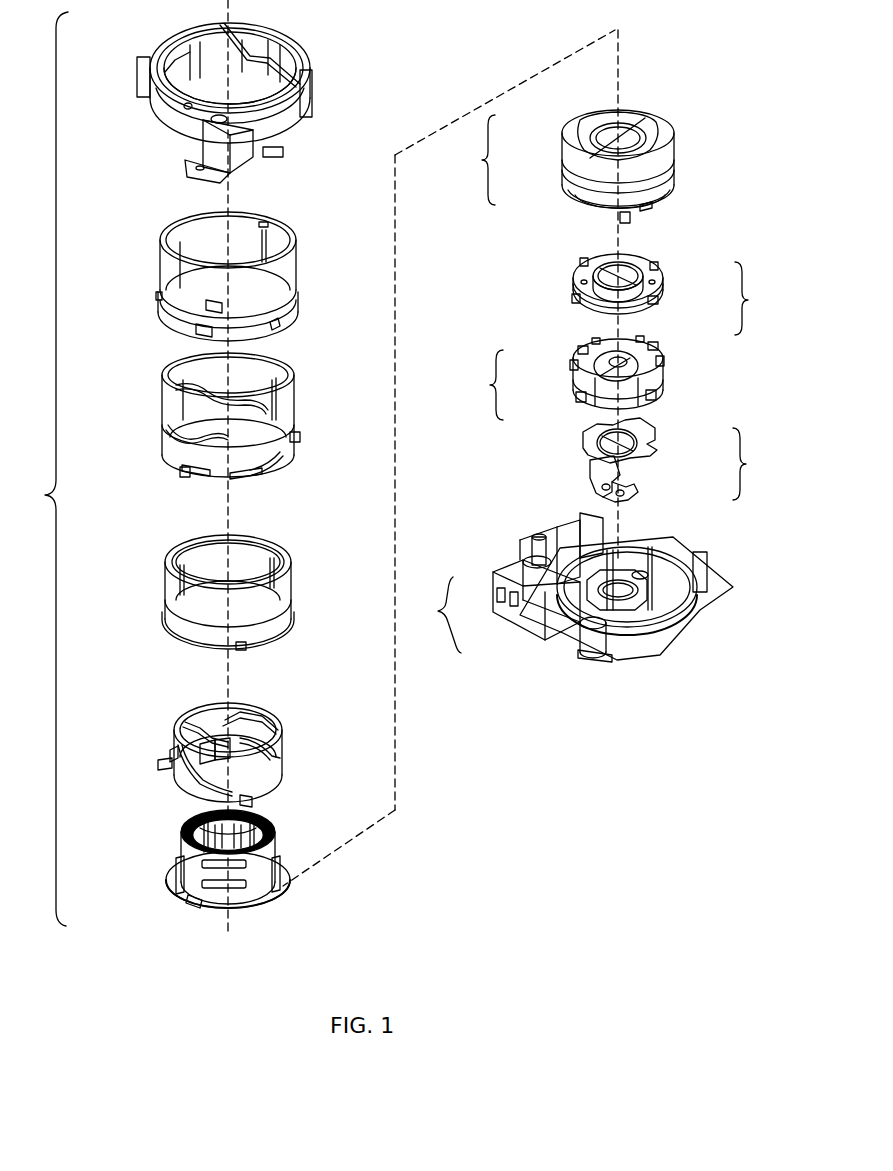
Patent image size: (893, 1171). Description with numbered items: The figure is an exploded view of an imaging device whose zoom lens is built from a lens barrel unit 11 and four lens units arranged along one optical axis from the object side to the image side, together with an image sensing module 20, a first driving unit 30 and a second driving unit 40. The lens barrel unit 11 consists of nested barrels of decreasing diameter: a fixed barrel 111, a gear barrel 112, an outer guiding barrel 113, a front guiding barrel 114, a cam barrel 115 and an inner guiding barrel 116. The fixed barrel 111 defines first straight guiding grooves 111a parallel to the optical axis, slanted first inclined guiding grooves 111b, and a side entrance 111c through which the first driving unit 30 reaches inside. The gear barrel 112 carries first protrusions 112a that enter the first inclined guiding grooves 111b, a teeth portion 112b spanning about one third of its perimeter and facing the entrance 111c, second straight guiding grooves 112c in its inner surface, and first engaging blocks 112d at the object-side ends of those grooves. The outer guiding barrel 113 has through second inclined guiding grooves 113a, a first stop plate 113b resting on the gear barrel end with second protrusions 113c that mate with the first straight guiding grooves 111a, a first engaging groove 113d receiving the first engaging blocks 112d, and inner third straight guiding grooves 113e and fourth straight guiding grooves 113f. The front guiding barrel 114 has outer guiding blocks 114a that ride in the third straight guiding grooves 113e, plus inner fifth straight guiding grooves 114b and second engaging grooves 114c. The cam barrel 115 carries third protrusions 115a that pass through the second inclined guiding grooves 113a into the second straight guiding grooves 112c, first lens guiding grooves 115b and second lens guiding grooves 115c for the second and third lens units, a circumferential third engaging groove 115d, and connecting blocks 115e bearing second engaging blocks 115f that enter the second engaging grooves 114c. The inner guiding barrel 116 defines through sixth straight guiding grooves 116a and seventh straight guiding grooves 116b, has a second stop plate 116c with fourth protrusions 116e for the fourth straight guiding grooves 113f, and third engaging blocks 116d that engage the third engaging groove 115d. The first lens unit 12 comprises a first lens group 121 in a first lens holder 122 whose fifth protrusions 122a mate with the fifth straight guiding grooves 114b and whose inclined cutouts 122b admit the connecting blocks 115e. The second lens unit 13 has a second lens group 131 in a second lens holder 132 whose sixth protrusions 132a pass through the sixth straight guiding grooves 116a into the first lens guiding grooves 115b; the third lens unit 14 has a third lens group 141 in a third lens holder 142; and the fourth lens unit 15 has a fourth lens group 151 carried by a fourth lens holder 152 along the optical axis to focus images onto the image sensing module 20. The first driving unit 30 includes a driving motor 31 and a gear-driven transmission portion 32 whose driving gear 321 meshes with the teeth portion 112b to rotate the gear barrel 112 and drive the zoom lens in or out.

The lens barrel unit 11 is at (43, 469).
The fixed barrel 111 is at (296, 128).
The first straight guiding grooves 111a is at (178, 44).
The first inclined guiding grooves 111b is at (228, 26).
The entrance 111c is at (140, 97).
The gear barrel 112 is at (290, 287).
The first protrusions 112a is at (275, 325).
The teeth portion 112b is at (158, 292).
The second straight guiding grooves 112c is at (264, 250).
The first engaging blocks 112d is at (265, 222).
The outer guiding barrel 113 is at (278, 440).
The second inclined guiding grooves 113a is at (192, 373).
The first stop plate 113b is at (273, 478).
The second protrusions 113c is at (184, 478).
The first engaging groove 113d is at (163, 412).
The third straight guiding grooves 113e is at (277, 371).
The fourth straight guiding grooves 113f is at (290, 410).
The front guiding barrel 114 is at (288, 603).
The guiding blocks 114a is at (242, 646).
The fifth straight guiding grooves 114b is at (277, 564).
The second engaging grooves 114c is at (208, 580).
The cam barrel 115 is at (270, 770).
The third protrusions 115a is at (166, 762).
The first lens guiding grooves 115b is at (240, 712).
The second lens guiding grooves 115c is at (276, 722).
The third engaging groove 115d is at (204, 727).
The connecting blocks 115e is at (172, 770).
The second engaging blocks 115f is at (174, 752).
The inner guiding barrel 116 is at (250, 905).
The sixth straight guiding grooves 116a is at (256, 818).
The seventh straight guiding grooves 116b is at (196, 826).
The second stop plate 116c is at (280, 880).
The third engaging blocks 116d is at (198, 902).
The fourth protrusions 116e is at (176, 862).
The first lens unit 12 is at (472, 160).
The first lens group 121 is at (600, 147).
The first lens holder 122 is at (573, 183).
The fifth protrusions 122a is at (630, 222).
The inclined cutouts 122b is at (648, 213).
The second lens unit 13 is at (754, 298).
The second lens group 131 is at (640, 276).
The second lens holder 132 is at (638, 310).
The sixth protrusions 132a is at (576, 300).
The third lens unit 14 is at (481, 385).
The third lens group 141 is at (606, 367).
The third lens holder 142 is at (603, 393).
The fourth lens unit 15 is at (753, 464).
The fourth lens group 151 is at (628, 442).
The fourth lens holder 152 is at (624, 467).
The image sensing module 20 is at (668, 567).
The first driving unit 30 is at (435, 615).
The driving motor 31 is at (548, 600).
The transmission portion 32 is at (504, 572).
The driving gear 321 is at (541, 537).
The second driving unit 40 is at (580, 653).